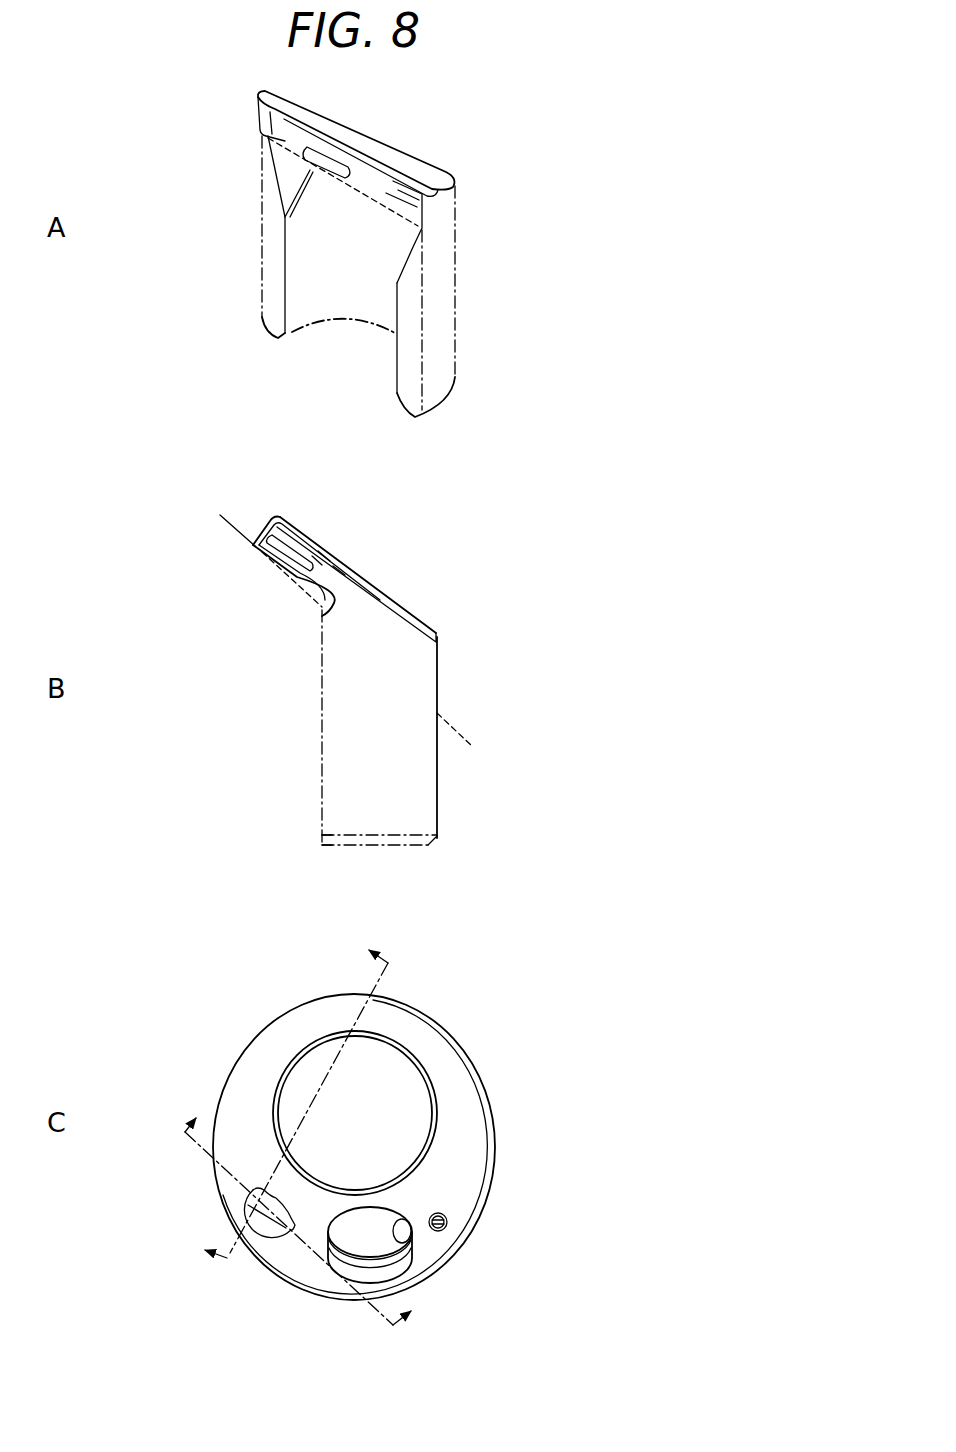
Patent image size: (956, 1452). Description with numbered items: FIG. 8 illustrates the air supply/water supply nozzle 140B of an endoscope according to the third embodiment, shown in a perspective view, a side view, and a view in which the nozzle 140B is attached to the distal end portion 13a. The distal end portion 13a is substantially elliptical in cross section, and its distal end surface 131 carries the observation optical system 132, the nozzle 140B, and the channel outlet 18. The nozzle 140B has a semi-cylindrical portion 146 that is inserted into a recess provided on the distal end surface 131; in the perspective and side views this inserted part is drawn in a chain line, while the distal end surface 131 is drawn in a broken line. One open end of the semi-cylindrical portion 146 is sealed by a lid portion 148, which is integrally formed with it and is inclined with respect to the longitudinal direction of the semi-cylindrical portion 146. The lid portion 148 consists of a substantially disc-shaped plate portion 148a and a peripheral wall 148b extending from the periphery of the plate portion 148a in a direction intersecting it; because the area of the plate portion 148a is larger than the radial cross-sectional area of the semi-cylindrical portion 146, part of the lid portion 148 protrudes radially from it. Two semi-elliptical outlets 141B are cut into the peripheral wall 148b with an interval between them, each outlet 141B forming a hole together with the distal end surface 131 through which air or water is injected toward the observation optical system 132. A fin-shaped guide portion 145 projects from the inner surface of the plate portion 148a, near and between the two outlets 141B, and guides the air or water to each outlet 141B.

The air supply/water supply nozzle 140B is at (412, 663).
The outlet 141B is at (256, 116).
The guide portion 145 is at (327, 168).
The semi-cylindrical portion 146 is at (440, 300).
The lid portion 148 is at (413, 365).
The plate portion 148a is at (407, 162).
The peripheral wall 148b is at (310, 145).
The distal end surface 131 is at (237, 528).
The observation optical system 132 is at (400, 1077).
The distal end portion 13a is at (481, 1012).
The channel outlet 18 is at (393, 1245).